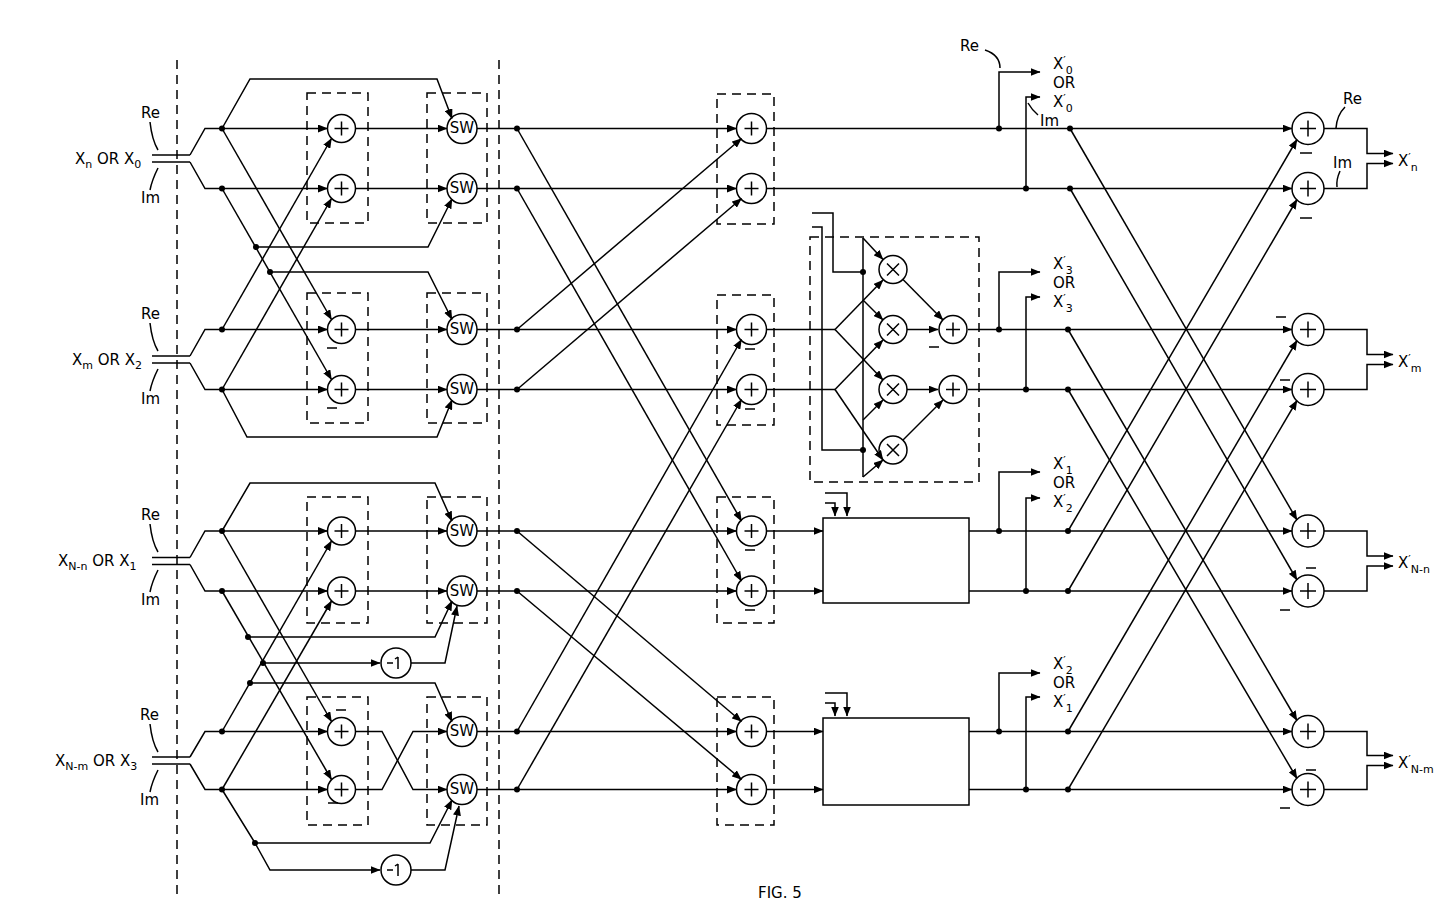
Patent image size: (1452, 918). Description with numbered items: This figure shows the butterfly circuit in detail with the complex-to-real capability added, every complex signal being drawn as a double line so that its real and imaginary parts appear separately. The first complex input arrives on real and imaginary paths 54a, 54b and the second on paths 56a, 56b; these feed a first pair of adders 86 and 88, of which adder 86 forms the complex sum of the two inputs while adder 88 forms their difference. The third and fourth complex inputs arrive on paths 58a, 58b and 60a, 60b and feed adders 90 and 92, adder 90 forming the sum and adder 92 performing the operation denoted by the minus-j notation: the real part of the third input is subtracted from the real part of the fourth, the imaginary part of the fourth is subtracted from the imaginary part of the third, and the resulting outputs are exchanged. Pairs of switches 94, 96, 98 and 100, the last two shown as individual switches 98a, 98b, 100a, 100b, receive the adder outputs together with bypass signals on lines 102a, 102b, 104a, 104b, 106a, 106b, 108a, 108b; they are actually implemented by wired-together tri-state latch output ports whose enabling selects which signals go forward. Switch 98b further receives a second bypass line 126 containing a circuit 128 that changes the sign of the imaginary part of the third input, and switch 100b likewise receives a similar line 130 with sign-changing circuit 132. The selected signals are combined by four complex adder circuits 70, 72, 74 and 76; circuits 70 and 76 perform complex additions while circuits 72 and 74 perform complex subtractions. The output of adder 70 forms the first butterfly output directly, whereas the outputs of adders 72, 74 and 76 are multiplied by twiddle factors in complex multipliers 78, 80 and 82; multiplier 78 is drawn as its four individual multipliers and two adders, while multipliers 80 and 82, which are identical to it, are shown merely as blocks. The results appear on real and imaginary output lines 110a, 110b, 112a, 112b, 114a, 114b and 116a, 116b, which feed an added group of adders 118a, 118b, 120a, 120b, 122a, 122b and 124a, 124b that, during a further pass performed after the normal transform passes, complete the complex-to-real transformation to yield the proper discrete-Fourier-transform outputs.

The real-part input signal path 54a is at (193, 150).
The imaginary-part input signal path 54b is at (193, 167).
The real-part input signal path 56a is at (193, 350).
The imaginary-part input signal path 56b is at (193, 378).
The real-part input signal path 58a is at (194, 550).
The imaginary-part input signal path 58b is at (193, 575).
The real-part input signal path 60a is at (194, 750).
The imaginary-part input signal path 60b is at (195, 778).
The adder circuit 70 is at (775, 103).
The adder circuit 72 is at (774, 295).
The adder circuit 74 is at (772, 497).
The adder circuit 76 is at (772, 697).
The multiplier circuit 78 is at (979, 237).
The multiplier circuit 80 is at (887, 590).
The multiplier circuit 82 is at (887, 792).
The adder 86 is at (368, 103).
The adder 88 is at (368, 302).
The adder 90 is at (368, 508).
The adder 92 is at (368, 804).
The switch 94 is at (487, 104).
The switch 96 is at (487, 302).
The switch 98 is at (479, 550).
The switch 98a is at (478, 515).
The switch 98b is at (478, 606).
The switch 100 is at (486, 753).
The switch 100a is at (477, 717).
The switch 100b is at (476, 802).
The real-part bypass signal path 102a is at (402, 79).
The imaginary-part bypass signal path 102b is at (432, 241).
The real-part bypass signal path 104a is at (430, 272).
The imaginary-part bypass signal path 104b is at (380, 437).
The real-part bypass signal path 106a is at (365, 479).
The imaginary-part bypass signal path 106b is at (388, 636).
The real-part bypass signal path 108a is at (369, 684).
The imaginary-part bypass signal path 108b is at (276, 843).
The output line 110a is at (1027, 71).
The output line 110b is at (1022, 107).
The output line 112a is at (1010, 272).
The output line 112b is at (1030, 307).
The output line 114a is at (1010, 472).
The output line 114b is at (1030, 507).
The output line 116a is at (1017, 672).
The output line 116b is at (1028, 708).
The adder 118a is at (1300, 118).
The adder 118b is at (1320, 200).
The adder 120a is at (1320, 322).
The adder 120b is at (1318, 406).
The adder 122a is at (1320, 522).
The adder 122b is at (1318, 607).
The adder 124a is at (1320, 722).
The adder 124b is at (1318, 807).
The second bypass line 126 is at (453, 633).
The sign-changing circuit 128 is at (381, 657).
The bypass line 130 is at (452, 852).
The sign-changing circuit 132 is at (411, 880).